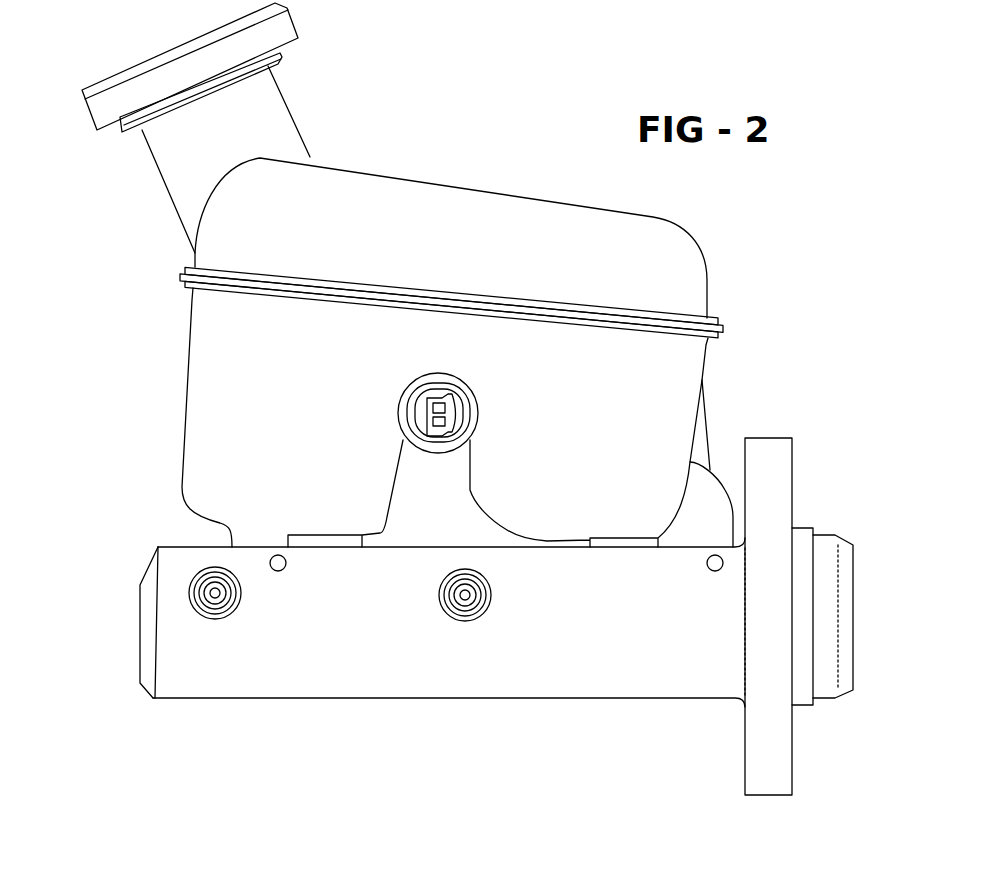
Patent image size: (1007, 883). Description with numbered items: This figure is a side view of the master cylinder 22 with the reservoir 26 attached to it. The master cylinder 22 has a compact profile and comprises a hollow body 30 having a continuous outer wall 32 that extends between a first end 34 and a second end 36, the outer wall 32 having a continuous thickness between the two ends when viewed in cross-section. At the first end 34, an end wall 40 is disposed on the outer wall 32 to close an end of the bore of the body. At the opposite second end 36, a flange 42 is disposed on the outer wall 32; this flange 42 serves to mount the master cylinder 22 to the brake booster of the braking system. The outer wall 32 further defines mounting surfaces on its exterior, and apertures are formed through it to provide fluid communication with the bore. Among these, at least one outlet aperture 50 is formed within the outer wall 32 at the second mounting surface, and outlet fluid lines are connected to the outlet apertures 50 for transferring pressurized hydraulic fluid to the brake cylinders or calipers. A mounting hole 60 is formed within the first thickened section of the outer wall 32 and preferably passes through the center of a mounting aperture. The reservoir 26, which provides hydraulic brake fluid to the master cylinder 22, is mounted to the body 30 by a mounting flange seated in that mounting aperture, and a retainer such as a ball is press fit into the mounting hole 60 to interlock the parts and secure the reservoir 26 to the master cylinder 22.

The master cylinder 22 is at (387, 714).
The reservoir 26 is at (455, 204).
The hollow body 30 is at (514, 675).
The outer wall 32 is at (220, 698).
The first end 34 is at (158, 547).
The second end 36 is at (826, 535).
The end wall 40 is at (148, 650).
The flange 42 is at (775, 768).
The outlet aperture 50 is at (437, 600).
The mounting hole 60 is at (284, 570).